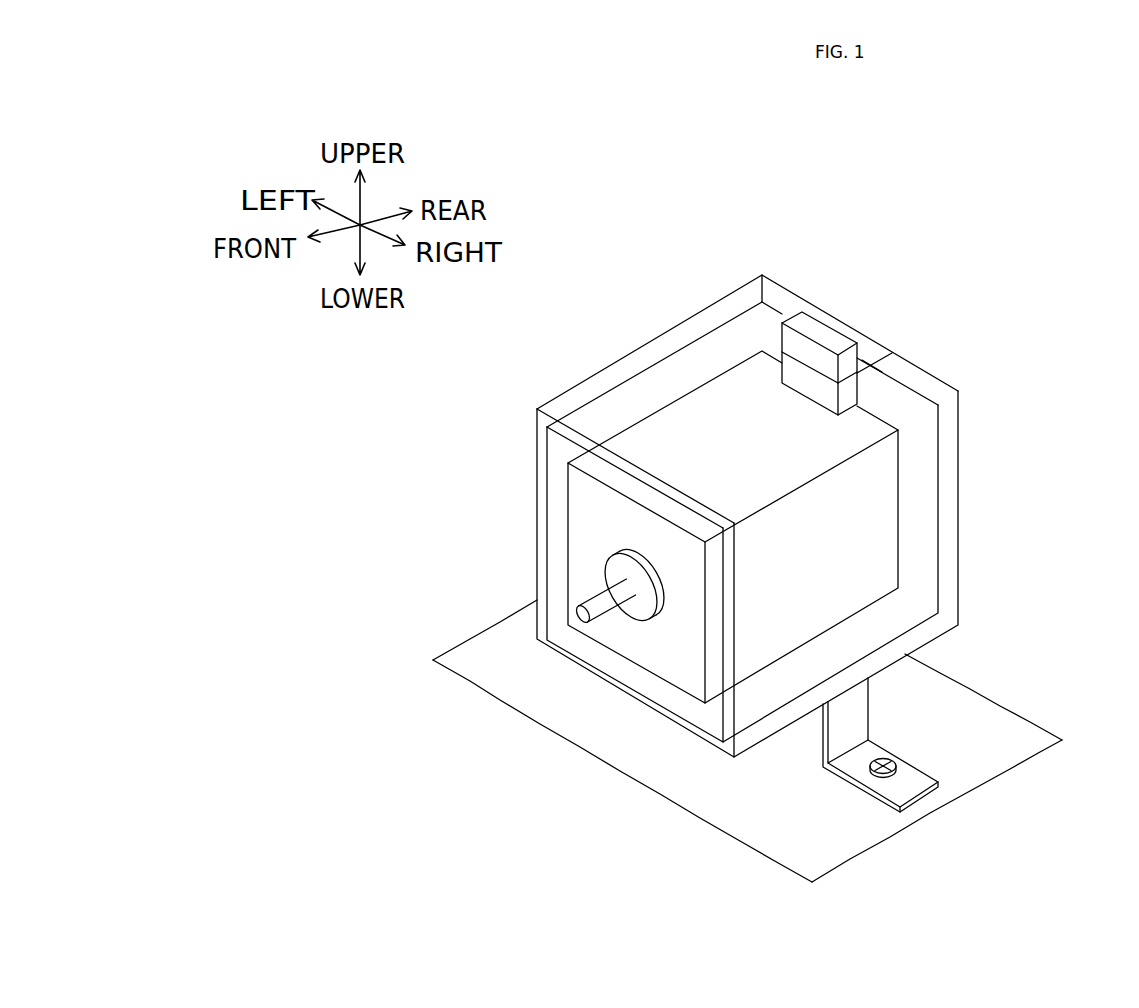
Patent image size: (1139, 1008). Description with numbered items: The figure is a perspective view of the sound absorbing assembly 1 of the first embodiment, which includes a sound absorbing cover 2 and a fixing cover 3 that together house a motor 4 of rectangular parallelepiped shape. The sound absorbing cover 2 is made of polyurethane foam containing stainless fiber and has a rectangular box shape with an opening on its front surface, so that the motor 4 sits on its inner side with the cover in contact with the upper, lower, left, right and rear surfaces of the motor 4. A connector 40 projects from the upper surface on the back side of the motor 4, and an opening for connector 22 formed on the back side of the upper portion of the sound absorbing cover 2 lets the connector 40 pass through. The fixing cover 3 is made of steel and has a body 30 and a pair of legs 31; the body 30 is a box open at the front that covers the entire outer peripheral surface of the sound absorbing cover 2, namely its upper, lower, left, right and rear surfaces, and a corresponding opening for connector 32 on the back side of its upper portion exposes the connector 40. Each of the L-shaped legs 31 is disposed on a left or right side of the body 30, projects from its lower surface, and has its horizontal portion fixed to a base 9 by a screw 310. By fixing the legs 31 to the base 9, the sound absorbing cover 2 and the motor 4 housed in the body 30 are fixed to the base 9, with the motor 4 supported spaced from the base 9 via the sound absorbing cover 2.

The sound absorbing assembly 1 is at (818, 516).
The sound absorbing cover 2 is at (610, 417).
The fixing cover 3 is at (772, 295).
The motor 4 is at (685, 662).
The base 9 is at (493, 667).
The opening for connector 22 is at (866, 380).
The body 30 is at (953, 484).
The legs 31 is at (964, 739).
The opening for connector 32 is at (879, 360).
The connector 40 is at (812, 332).
The screw 310 is at (889, 765).